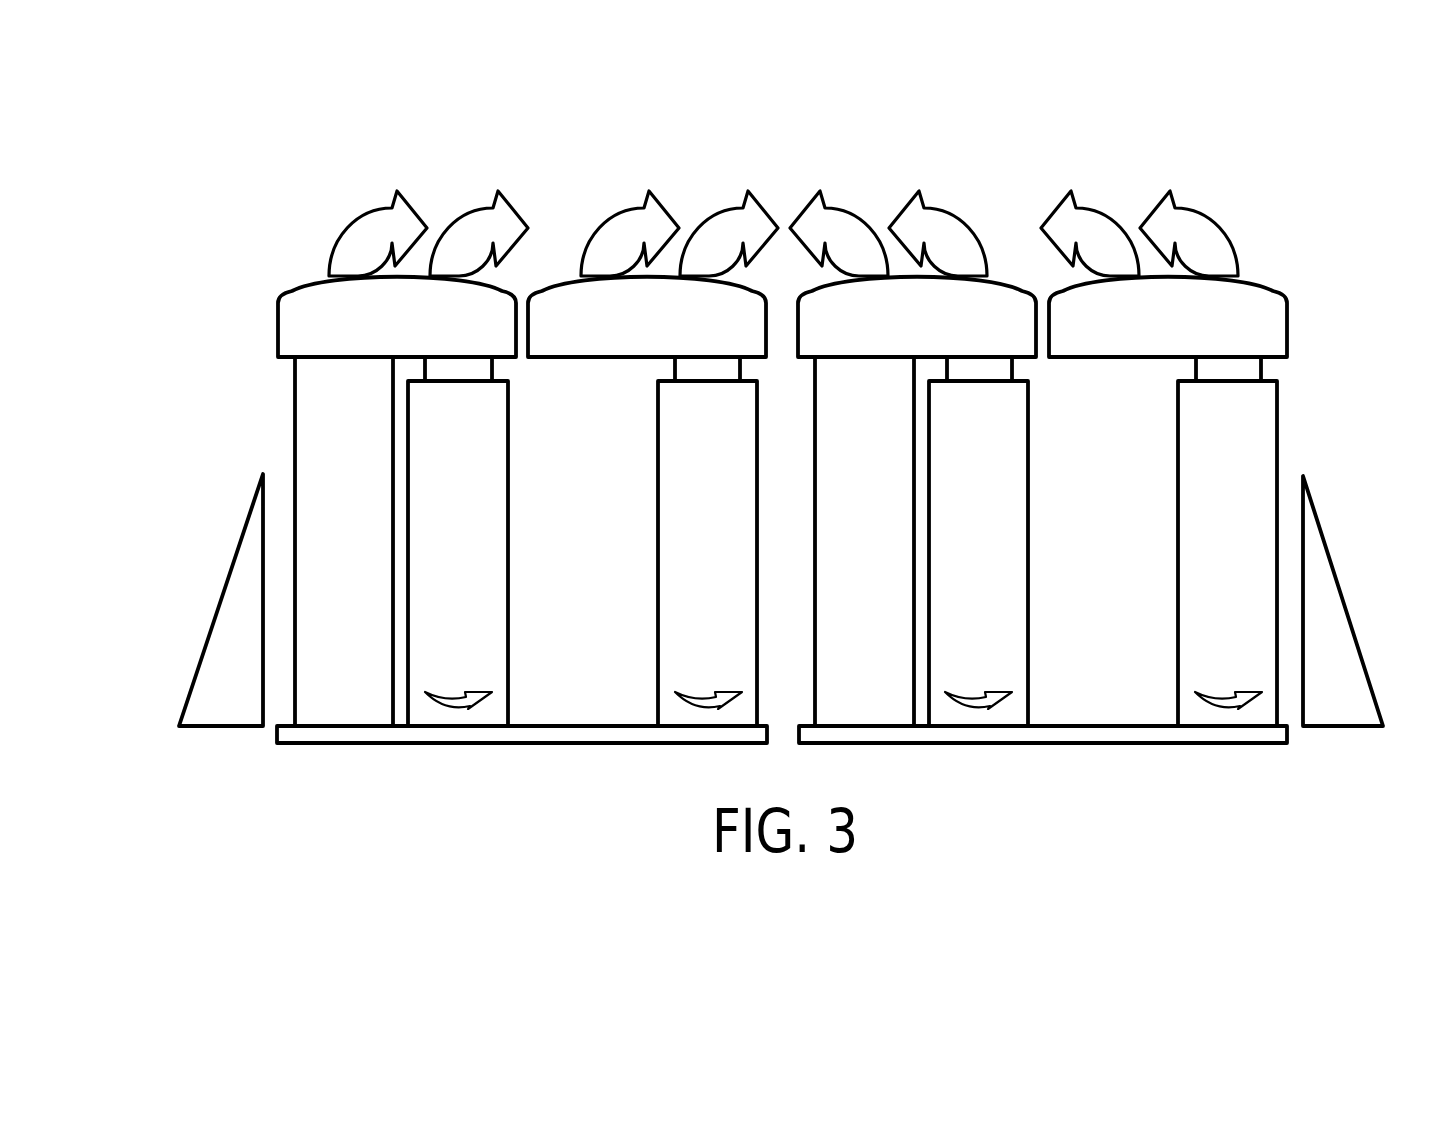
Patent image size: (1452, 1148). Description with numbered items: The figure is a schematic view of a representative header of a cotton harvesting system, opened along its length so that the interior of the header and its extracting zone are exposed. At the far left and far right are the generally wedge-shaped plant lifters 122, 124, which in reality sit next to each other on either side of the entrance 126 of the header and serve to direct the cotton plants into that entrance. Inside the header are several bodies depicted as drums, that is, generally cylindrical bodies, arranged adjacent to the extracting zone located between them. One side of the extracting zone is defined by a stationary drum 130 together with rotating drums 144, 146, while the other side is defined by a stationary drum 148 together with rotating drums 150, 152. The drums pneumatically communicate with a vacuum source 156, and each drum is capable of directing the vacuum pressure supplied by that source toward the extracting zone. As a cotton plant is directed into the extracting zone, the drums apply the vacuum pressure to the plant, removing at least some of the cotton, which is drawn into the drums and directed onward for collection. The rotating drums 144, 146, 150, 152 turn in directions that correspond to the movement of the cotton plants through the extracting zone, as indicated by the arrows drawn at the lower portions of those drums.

The plant lifter 122 is at (235, 598).
The plant lifter 124 is at (1330, 598).
The entrance 126 is at (222, 430).
The stationary drum 130 is at (370, 541).
The rotating drum 144 is at (484, 541).
The rotating drum 146 is at (734, 541).
The stationary drum 148 is at (890, 541).
The rotating drum 150 is at (1004, 541).
The rotating drum 152 is at (1250, 541).
The vacuum source 156 is at (424, 341).